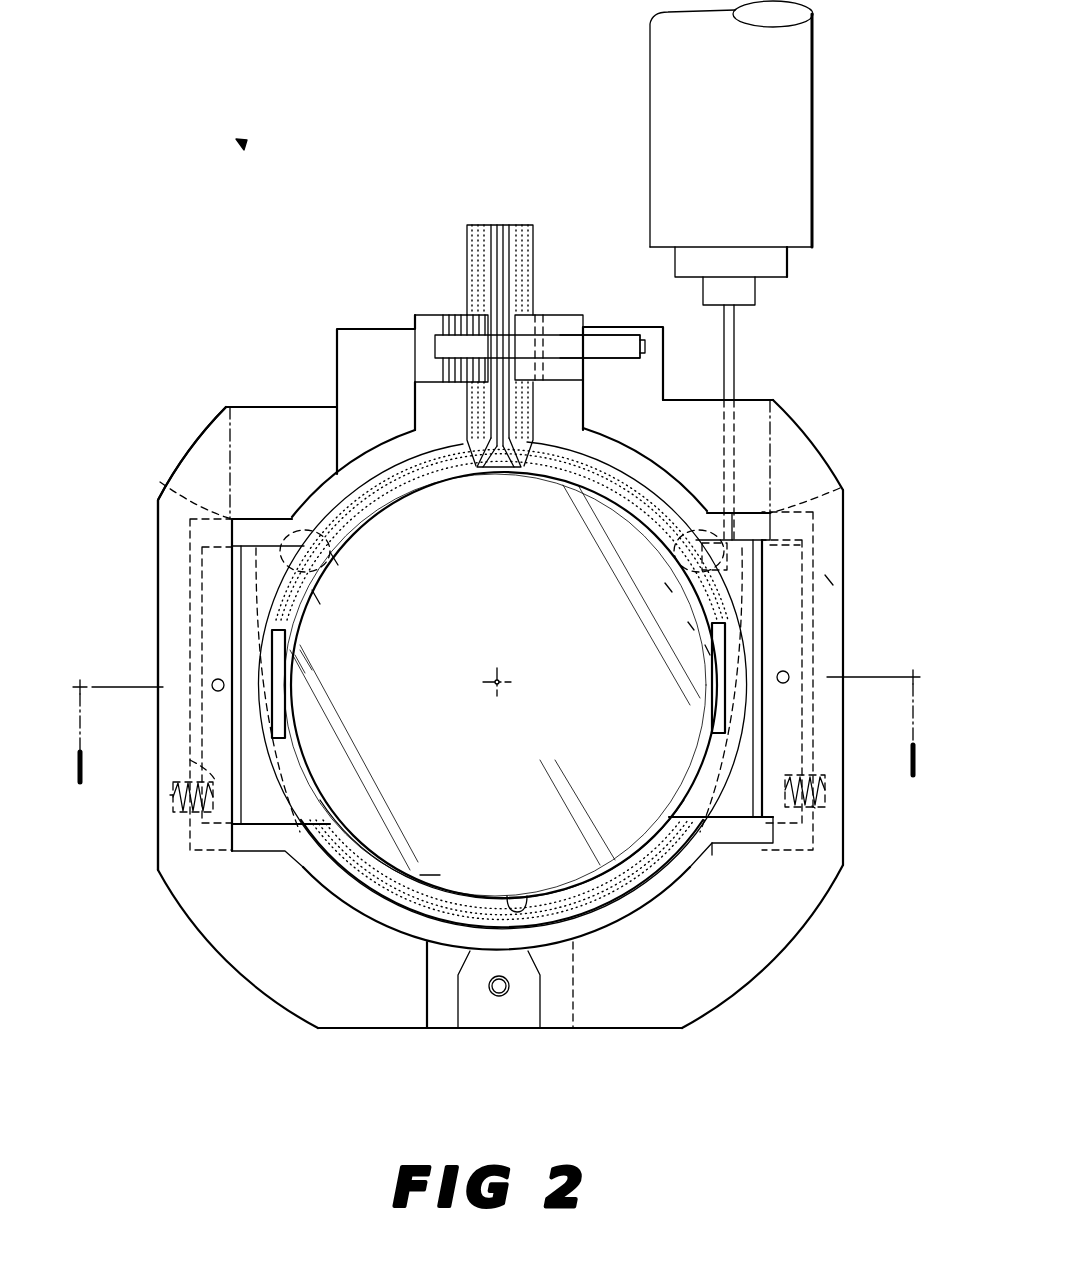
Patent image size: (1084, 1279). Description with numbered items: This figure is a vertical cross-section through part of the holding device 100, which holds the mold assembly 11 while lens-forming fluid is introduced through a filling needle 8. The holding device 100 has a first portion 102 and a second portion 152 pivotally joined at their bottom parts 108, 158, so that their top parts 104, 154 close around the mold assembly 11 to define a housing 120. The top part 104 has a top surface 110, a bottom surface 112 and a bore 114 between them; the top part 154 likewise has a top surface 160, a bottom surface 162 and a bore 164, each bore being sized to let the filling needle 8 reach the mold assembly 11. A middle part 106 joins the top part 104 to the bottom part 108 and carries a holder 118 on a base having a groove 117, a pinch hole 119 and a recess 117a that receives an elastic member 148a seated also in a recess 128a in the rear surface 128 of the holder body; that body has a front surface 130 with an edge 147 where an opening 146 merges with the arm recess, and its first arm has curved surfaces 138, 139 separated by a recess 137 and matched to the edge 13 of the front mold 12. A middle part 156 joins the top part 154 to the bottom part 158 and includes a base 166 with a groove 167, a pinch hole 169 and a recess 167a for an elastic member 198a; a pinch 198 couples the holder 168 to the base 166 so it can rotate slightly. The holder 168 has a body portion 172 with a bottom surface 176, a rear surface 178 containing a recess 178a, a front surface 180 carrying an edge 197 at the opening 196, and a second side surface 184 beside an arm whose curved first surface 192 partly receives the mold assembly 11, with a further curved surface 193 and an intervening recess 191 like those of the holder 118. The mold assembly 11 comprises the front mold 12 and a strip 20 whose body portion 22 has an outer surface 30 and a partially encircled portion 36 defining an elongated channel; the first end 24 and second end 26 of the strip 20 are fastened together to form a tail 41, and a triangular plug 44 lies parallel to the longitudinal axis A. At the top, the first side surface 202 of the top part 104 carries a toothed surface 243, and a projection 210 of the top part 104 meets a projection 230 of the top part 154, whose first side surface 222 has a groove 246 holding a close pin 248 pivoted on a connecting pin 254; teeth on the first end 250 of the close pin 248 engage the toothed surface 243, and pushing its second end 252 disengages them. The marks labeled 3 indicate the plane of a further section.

The holding device 100 is at (242, 148).
The filling needle 8 is at (733, 340).
The mold assembly 11 is at (434, 884).
The front mold 12 is at (500, 685).
The edge 13 is at (515, 897).
The strip 20 is at (616, 903).
The body portion 22 is at (640, 885).
The first end 24 is at (493, 227).
The second end 26 is at (511, 227).
The outer surface 30 is at (360, 890).
The partially encircled portion 36 is at (417, 992).
The tail 41 is at (481, 272).
The plug 44 is at (500, 476).
The first portion 102 is at (195, 440).
The top part 104 is at (310, 420).
The middle part 106 is at (160, 590).
The bottom part 108 is at (333, 1036).
The top surface 110 is at (268, 405).
The bottom surface 112 is at (425, 1036).
The bore 114 is at (240, 407).
The groove 117 is at (190, 557).
The recess 117a is at (172, 810).
The holder 118 is at (290, 800).
The pinch hole 119 is at (212, 684).
The housing 120 is at (440, 1028).
The rear surface 128 is at (200, 635).
The recess 128a is at (210, 762).
The front surface 130 is at (305, 690).
The recess 137 is at (292, 638).
The first curved surface 138 is at (308, 582).
The second curved surface 139 is at (300, 722).
The opening 146 is at (338, 548).
The edge 147 is at (205, 500).
The elastic member 148a is at (190, 790).
The second portion 152 is at (808, 421).
The top part 154 is at (805, 465).
The middle part 156 is at (830, 580).
The bottom part 158 is at (715, 985).
The top surface 160 is at (740, 398).
The bottom surface 162 is at (638, 1036).
The bore 164 is at (788, 386).
The base 166 is at (830, 880).
The groove 167 is at (815, 625).
The recess 167a is at (812, 808).
The holder 168 is at (702, 587).
The pinch hole 169 is at (789, 674).
The body portion 172 is at (712, 613).
The bottom surface 176 is at (730, 855).
The rear surface 178 is at (800, 722).
The recess 178a is at (805, 830).
The front surface 180 is at (800, 545).
The second side surface 184 is at (702, 788).
The disc clamp 191 is at (700, 710).
The first curved surface 192 is at (677, 565).
The axis line 193 is at (707, 723).
The opening 196 is at (660, 483).
The edge 197 is at (800, 505).
The pinch 198 is at (788, 683).
The elastic member 198a is at (822, 782).
The first side surface 202 is at (376, 394).
The projection 210 is at (490, 470).
The first side surface 222 is at (623, 378).
The projection 230 is at (518, 470).
The toothed surface 243 is at (456, 315).
The groove 246 is at (562, 330).
The close pin 248 is at (600, 342).
The first end 250 is at (437, 345).
The second end 252 is at (641, 346).
The connecting pin 254 is at (540, 325).
The section line 3 is at (496, 732).
The longitudinal axis A is at (494, 680).